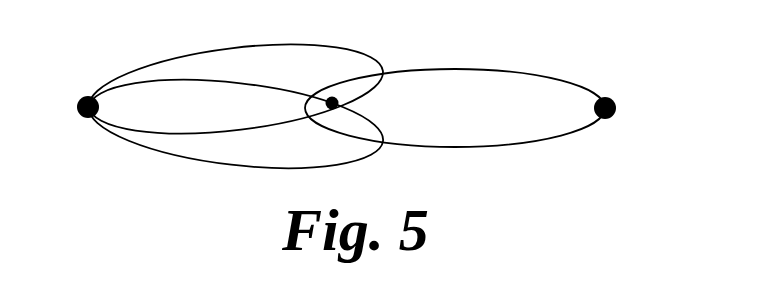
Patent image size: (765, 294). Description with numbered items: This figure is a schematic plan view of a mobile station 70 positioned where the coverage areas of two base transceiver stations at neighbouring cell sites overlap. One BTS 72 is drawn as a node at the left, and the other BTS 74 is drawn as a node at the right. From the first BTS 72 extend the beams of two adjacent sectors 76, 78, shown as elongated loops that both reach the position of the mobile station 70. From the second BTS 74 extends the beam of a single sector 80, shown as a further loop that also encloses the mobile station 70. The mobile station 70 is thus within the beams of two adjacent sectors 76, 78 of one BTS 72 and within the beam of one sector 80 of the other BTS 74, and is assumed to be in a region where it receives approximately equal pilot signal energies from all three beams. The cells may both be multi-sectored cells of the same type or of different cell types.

The mobile station 70 is at (332, 103).
The BTS 72 is at (85, 118).
The BTS 74 is at (607, 118).
The sector 76 is at (190, 53).
The sector 78 is at (183, 158).
The sector 80 is at (510, 70).